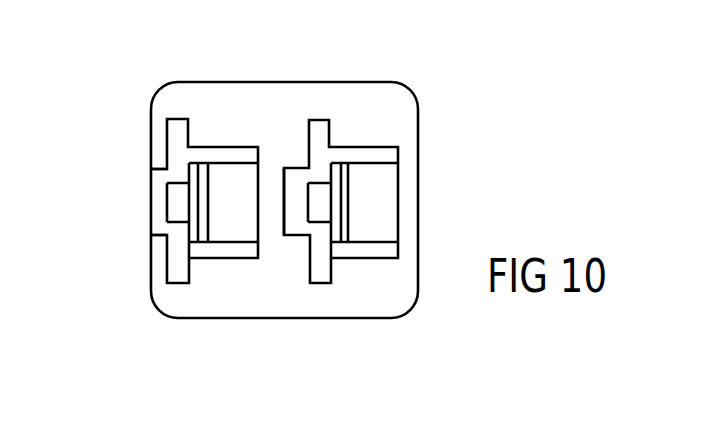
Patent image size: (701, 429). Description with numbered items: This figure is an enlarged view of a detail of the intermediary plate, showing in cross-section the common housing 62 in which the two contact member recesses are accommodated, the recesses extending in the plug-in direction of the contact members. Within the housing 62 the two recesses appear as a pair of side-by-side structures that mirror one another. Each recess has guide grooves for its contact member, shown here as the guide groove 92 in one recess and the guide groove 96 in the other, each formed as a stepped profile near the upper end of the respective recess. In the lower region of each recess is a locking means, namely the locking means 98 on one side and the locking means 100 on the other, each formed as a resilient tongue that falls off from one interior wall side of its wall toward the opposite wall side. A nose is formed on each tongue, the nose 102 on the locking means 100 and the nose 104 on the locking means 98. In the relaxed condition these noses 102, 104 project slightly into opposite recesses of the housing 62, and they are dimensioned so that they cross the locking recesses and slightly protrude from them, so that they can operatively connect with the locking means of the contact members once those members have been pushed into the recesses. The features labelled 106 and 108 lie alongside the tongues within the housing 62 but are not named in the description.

The housing 62 is at (452, 123).
The guide groove 92 is at (322, 130).
The guide groove 96 is at (178, 123).
The locking means 98 is at (375, 192).
The locking means 100 is at (235, 222).
The nose 102 is at (170, 197).
The nose 104 is at (315, 213).
The slot 106 is at (297, 178).
The slot 108 is at (158, 226).